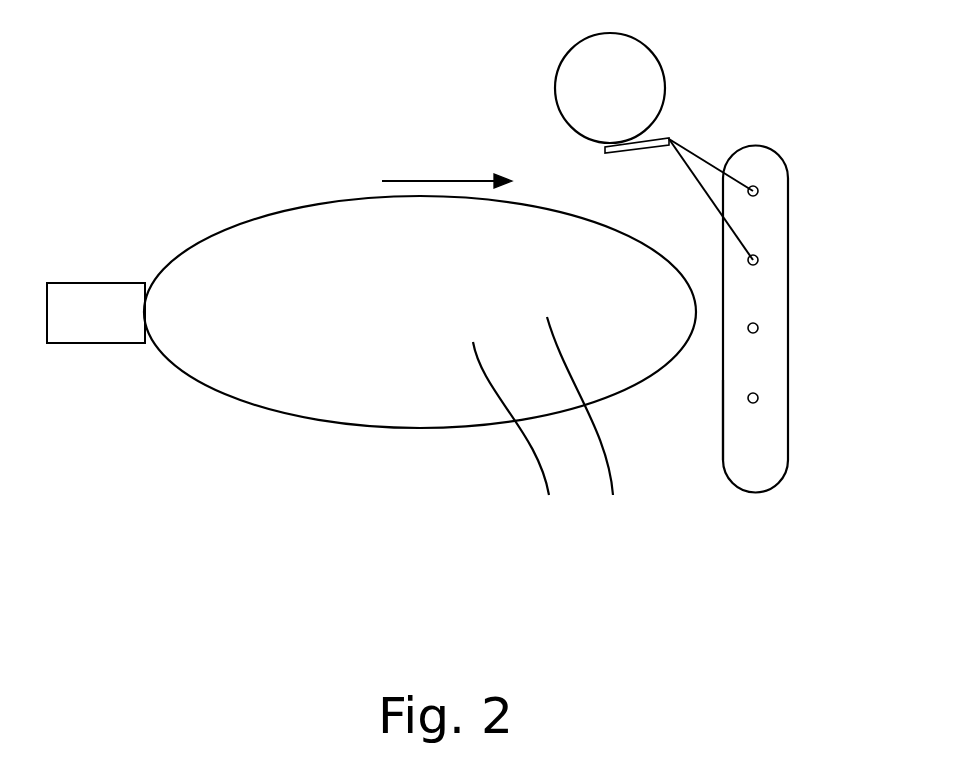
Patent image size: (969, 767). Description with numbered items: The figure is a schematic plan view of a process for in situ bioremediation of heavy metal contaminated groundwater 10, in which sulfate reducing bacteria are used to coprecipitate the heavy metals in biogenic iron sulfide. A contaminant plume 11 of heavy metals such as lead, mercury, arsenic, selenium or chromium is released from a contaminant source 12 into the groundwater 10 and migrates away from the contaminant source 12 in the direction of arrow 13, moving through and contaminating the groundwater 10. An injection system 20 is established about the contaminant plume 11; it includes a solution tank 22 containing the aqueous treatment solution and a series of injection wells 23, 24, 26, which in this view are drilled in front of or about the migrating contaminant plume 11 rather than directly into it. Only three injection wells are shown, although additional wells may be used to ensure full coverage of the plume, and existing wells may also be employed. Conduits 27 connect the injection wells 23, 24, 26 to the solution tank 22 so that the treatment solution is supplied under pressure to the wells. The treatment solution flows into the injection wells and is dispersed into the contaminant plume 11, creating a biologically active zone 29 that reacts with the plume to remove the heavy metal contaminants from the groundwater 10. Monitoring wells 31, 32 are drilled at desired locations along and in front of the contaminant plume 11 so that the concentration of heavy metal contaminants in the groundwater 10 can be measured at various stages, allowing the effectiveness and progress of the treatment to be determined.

The groundwater 10 is at (404, 440).
The contaminant plume 11 is at (520, 434).
The contaminant source 12 is at (96, 313).
The arrow 13 is at (453, 181).
The injection system 20 is at (812, 293).
The solution tank 22 is at (630, 70).
The injection well 23 is at (758, 189).
The injection well 24 is at (758, 258).
The injection well 26 is at (758, 398).
The conduits 27 is at (707, 157).
The biologically active zone 29 is at (733, 456).
The monitoring well 31 is at (758, 328).
The monitoring well 32 is at (588, 421).